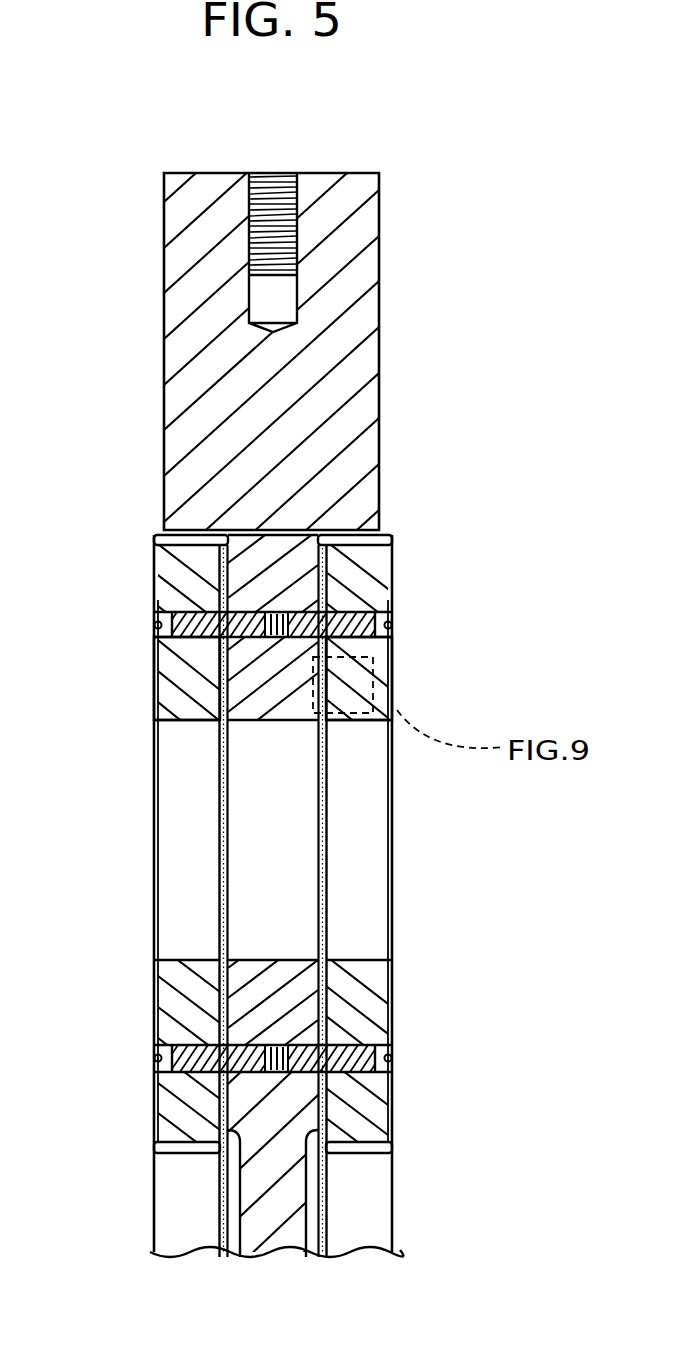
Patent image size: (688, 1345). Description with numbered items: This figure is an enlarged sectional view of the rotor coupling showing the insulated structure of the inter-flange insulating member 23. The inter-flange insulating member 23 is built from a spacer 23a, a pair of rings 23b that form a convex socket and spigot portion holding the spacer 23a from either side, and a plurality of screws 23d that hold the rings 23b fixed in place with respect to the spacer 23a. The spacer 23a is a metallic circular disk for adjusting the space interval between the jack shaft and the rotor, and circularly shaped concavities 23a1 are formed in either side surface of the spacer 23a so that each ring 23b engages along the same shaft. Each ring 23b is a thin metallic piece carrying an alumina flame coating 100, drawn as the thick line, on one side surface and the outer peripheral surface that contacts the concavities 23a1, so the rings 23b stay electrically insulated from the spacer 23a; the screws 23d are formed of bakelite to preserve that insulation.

The inter-flange insulating member 23 is at (163, 224).
The spacer 23a is at (353, 404).
The circularly shaped concavity 23a1 is at (165, 548).
The screw 23d is at (177, 582).
The ring 23b is at (155, 688).
The alumina flame coating 100 is at (232, 686).